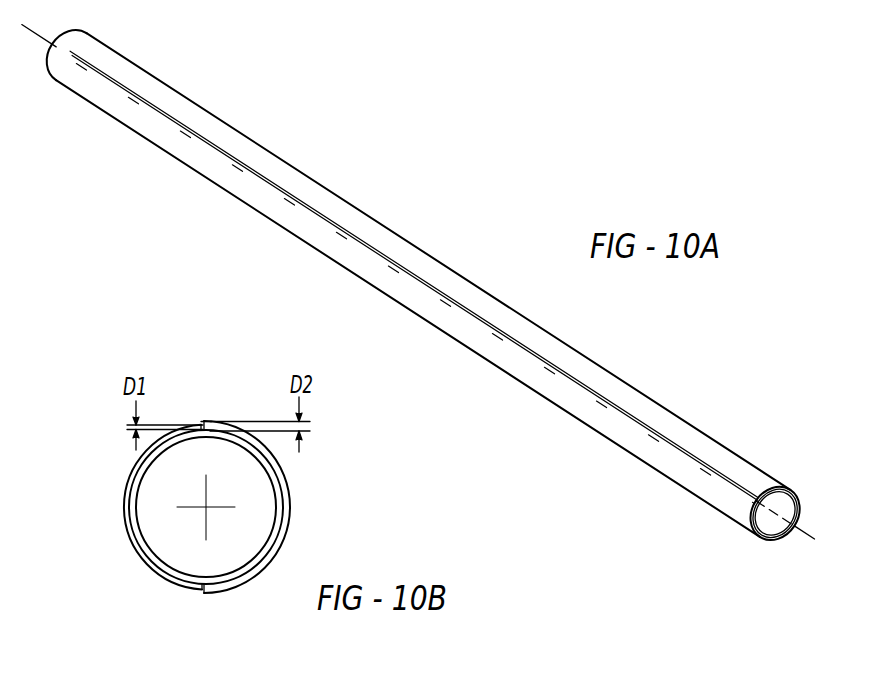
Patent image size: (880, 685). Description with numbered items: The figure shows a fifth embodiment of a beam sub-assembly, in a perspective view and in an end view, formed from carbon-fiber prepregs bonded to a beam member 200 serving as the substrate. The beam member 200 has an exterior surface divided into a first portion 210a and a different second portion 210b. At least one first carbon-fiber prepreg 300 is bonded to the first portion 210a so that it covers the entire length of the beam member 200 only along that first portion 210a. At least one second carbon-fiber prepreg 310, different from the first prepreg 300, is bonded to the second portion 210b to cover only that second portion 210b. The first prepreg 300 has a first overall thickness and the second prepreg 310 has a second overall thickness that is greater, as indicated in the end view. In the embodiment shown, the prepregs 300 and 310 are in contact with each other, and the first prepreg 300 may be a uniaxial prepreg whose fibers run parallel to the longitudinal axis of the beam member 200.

In FIG. 10A, the beam member 200 is at (762, 542).
In FIG. 10B, the beam member 200 is at (176, 576).
In FIG. 10B, the first portion of exterior surface 210a is at (130, 482).
In FIG. 10B, the second portion of exterior surface 210b is at (285, 485).
In FIG. 10A, the first carbon-fiber prepreg 300 is at (618, 433).
In FIG. 10B, the first carbon-fiber prepreg 300 is at (130, 540).
In FIG. 10A, the second carbon-fiber prepreg 310 is at (648, 415).
In FIG. 10B, the second carbon-fiber prepreg 310 is at (293, 525).